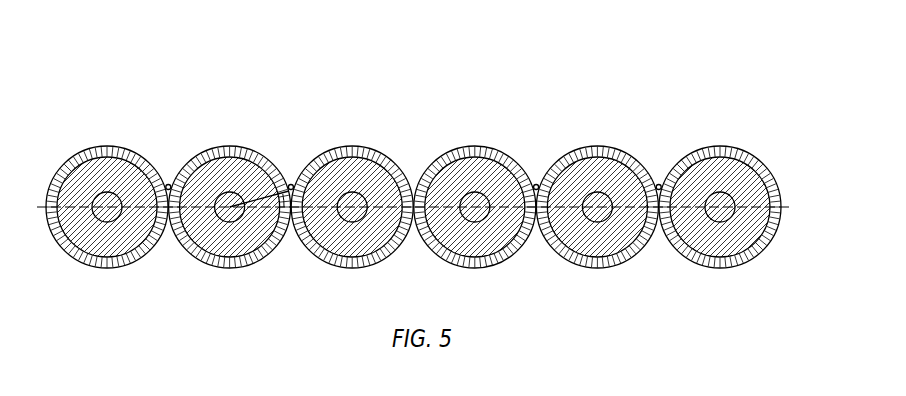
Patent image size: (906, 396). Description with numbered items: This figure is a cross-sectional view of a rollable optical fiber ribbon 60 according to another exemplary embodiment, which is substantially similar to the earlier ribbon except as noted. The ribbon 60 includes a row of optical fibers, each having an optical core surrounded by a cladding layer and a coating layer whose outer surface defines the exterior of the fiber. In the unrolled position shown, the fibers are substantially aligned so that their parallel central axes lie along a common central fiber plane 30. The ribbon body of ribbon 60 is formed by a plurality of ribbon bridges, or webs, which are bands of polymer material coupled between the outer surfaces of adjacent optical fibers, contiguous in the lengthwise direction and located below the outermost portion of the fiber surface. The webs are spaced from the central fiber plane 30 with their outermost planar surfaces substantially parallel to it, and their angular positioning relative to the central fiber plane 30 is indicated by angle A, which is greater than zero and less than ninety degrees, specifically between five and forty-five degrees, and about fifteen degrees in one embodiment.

The central fiber plane 30 is at (38, 204).
The rollable optical fiber ribbon 60 is at (603, 72).
The angle A is at (288, 196).